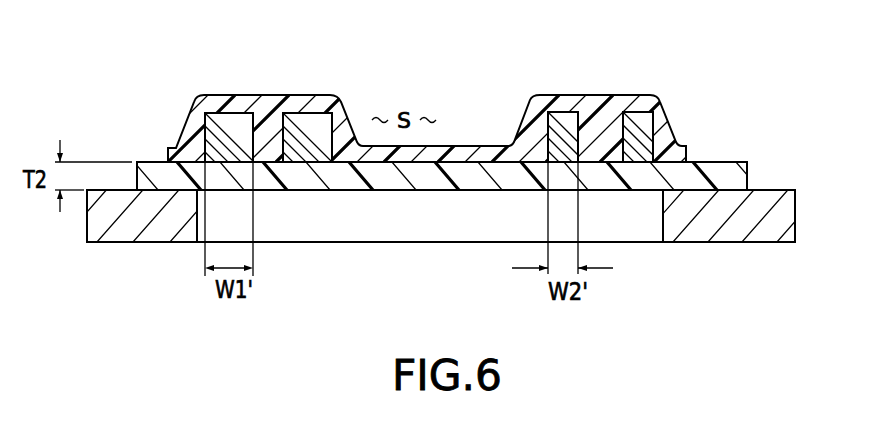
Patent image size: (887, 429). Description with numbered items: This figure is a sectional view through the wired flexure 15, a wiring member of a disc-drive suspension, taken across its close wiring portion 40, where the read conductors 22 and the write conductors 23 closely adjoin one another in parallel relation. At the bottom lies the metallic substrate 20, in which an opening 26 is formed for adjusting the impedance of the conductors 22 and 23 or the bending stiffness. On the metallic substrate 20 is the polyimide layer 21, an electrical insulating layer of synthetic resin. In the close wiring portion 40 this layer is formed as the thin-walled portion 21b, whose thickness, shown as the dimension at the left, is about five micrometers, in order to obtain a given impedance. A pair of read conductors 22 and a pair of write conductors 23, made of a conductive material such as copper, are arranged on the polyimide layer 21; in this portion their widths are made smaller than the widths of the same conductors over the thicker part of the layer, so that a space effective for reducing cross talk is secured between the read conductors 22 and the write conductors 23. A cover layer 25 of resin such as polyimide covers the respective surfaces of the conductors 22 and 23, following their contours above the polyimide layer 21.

The wired flexure 15 is at (442, 151).
The metallic substrate 20 is at (139, 236).
The polyimide layer 21 is at (747, 170).
The thin-walled portion 21b is at (473, 167).
The read conductors 22 is at (228, 120).
The write conductors 23 is at (563, 120).
The cover layer 25 is at (661, 108).
The opening 26 is at (428, 230).
The close wiring portion 40 is at (434, 93).